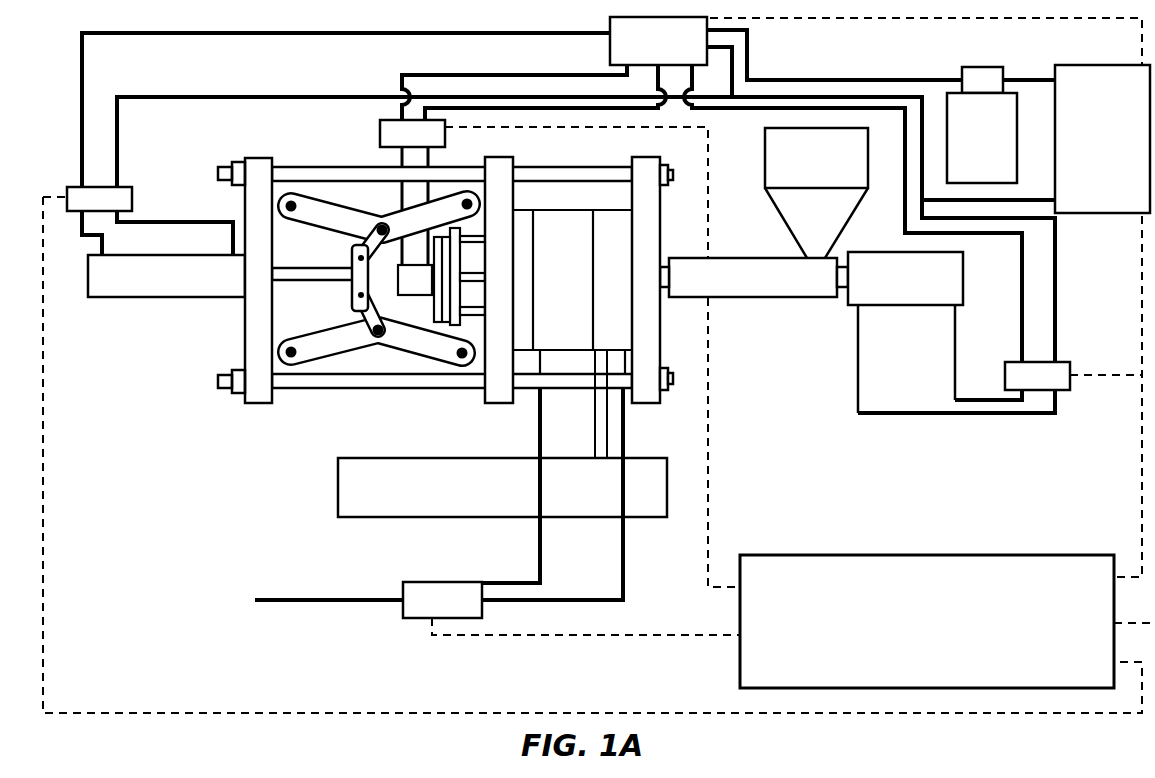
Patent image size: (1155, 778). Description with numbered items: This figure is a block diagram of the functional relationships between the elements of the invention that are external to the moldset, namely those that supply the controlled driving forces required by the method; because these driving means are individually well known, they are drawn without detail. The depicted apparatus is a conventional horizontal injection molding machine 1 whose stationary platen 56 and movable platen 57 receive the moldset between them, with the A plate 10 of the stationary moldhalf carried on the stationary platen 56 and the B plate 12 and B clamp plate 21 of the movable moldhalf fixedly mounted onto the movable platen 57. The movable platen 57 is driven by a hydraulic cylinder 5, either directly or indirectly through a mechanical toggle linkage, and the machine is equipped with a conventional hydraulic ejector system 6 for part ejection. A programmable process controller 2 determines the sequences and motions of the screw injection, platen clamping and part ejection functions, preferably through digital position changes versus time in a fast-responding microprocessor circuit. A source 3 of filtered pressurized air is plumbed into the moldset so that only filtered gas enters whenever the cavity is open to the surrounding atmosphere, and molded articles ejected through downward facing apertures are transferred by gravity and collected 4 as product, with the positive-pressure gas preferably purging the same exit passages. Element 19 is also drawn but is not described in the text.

The horizontal injection molding machine 1 is at (599, 365).
The programmable process controller 2 is at (963, 567).
The source of pressurized air 3 is at (378, 588).
The collection of molded articles 4 is at (343, 475).
The hydraulic cylinder 5 is at (115, 287).
The hydraulic ejector system 6 is at (407, 280).
The A plate 10 is at (572, 252).
The B plate 12 is at (570, 220).
The ejector rods 19 is at (597, 408).
The B clamp plate 21 is at (522, 220).
The stationary platen 56 is at (638, 390).
The movable platen 57 is at (490, 390).